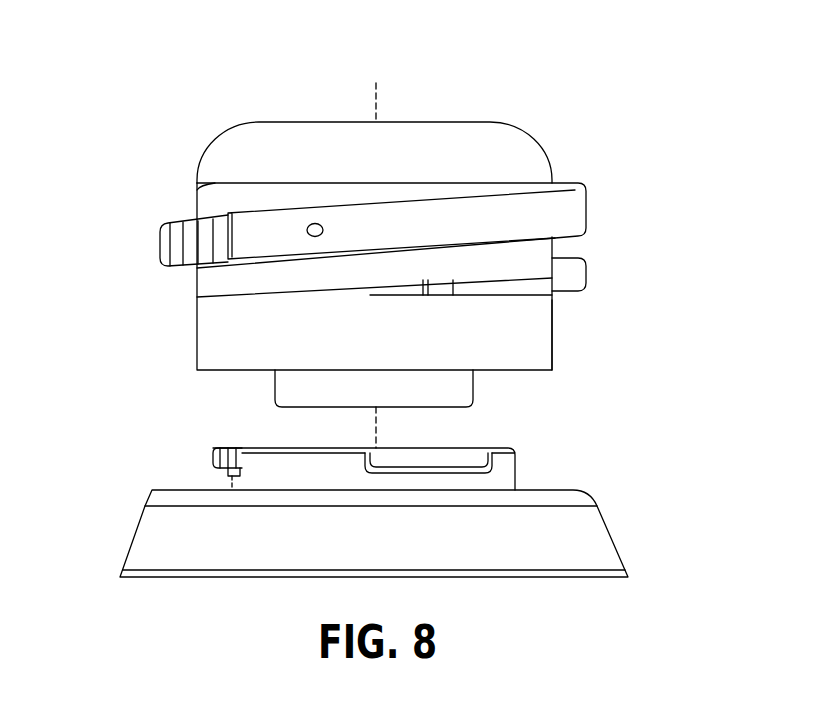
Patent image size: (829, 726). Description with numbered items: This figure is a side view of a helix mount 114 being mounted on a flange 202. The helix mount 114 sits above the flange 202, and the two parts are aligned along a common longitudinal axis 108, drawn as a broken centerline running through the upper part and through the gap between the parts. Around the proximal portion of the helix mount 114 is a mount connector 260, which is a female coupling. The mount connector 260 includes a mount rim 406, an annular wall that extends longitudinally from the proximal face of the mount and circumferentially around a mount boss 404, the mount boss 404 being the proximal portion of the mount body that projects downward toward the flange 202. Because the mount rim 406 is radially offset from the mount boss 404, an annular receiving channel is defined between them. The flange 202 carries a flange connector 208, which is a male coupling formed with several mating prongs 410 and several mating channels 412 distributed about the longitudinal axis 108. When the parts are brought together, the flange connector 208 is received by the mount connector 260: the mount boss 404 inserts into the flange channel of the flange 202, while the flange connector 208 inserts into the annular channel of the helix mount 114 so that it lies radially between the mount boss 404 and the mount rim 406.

The longitudinal axis 108 is at (376, 103).
The helix mount 114 is at (626, 202).
The flange 202 is at (646, 512).
The flange connector 208 is at (272, 472).
The mount connector 260 is at (532, 358).
The mount boss 404 is at (458, 387).
The mount rim 406 is at (205, 358).
The mating prongs 410 is at (214, 455).
The mating channels 412 is at (226, 477).